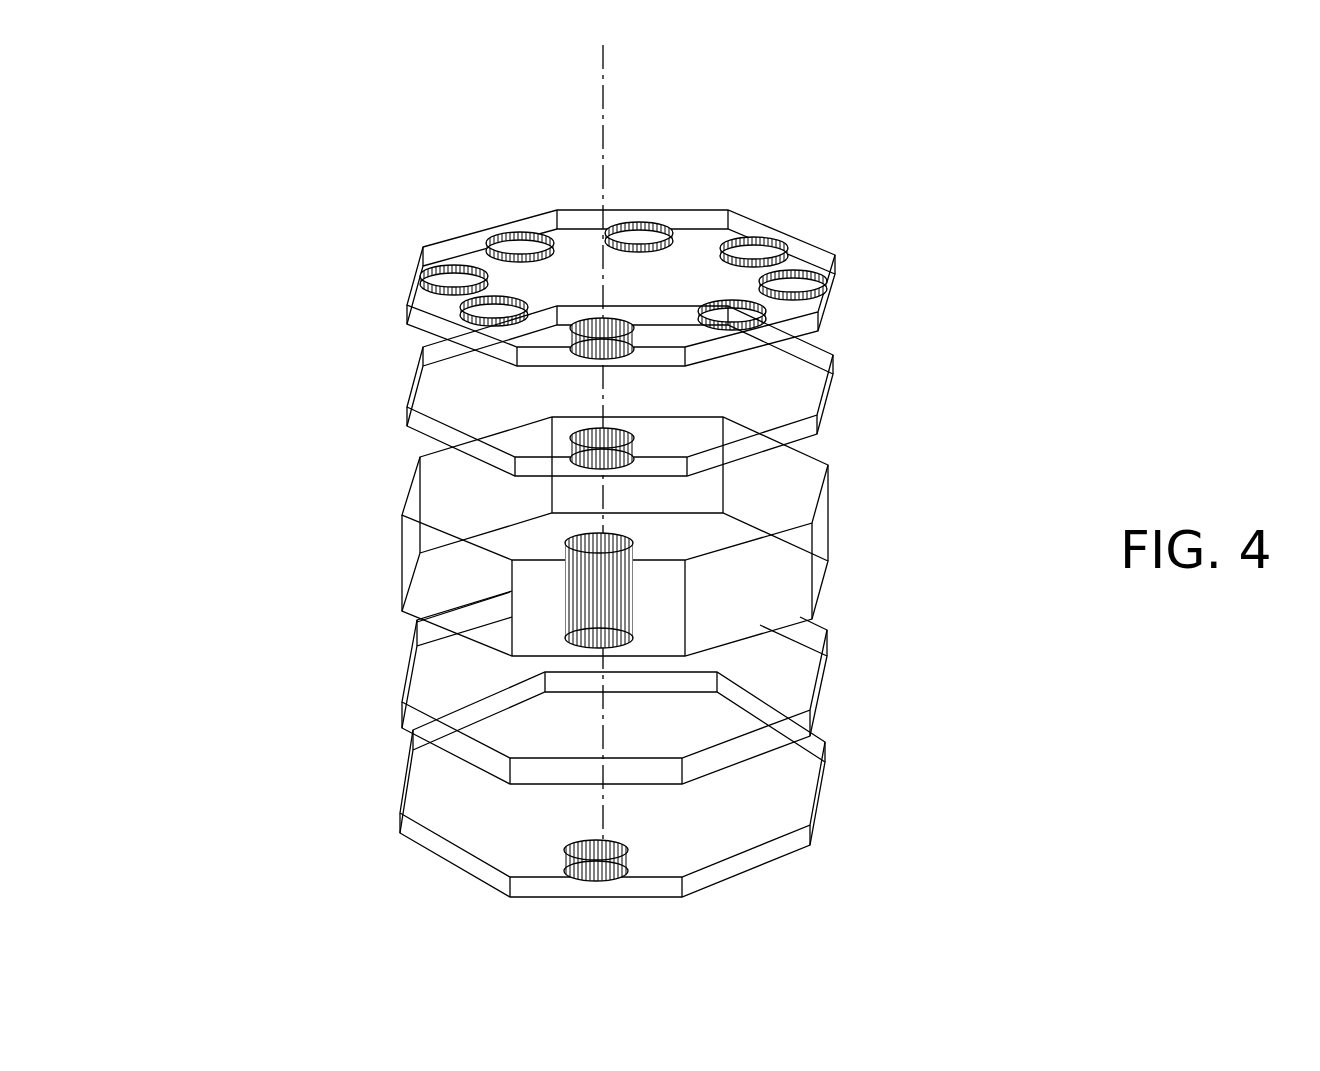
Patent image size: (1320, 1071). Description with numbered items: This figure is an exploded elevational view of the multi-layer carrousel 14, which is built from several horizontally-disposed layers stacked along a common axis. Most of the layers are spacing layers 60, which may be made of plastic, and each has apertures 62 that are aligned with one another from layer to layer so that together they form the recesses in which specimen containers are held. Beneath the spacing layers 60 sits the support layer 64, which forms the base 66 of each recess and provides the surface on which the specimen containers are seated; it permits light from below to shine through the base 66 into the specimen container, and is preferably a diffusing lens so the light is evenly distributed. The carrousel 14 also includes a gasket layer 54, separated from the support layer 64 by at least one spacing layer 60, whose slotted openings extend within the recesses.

The carrousel 14 is at (570, 471).
The gasket layer 54 is at (400, 407).
The spacing layer 60 is at (392, 303).
The aperture 62 is at (655, 337).
The support layer 64 is at (395, 703).
The base 66 is at (425, 667).